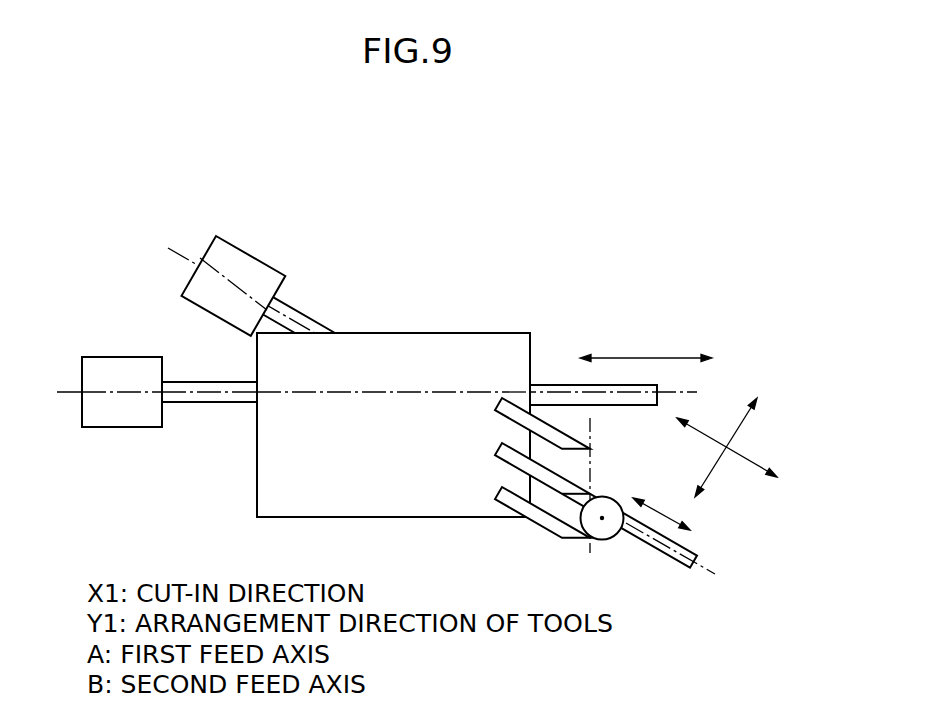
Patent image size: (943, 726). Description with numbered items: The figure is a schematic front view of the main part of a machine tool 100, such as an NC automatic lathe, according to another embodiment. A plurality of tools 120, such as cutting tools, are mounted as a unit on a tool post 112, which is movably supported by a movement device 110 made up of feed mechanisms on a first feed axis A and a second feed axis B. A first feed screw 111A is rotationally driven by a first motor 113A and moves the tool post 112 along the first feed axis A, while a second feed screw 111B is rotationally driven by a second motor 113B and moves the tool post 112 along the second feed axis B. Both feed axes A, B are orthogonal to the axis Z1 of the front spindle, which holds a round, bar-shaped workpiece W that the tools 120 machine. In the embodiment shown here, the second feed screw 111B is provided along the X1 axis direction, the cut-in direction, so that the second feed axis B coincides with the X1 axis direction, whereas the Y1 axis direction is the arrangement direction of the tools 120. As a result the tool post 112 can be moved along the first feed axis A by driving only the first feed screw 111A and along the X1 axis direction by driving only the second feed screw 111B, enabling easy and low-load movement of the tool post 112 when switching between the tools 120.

The machine tool 100 is at (605, 250).
The movement device 110 is at (345, 220).
The first feed screw 111A is at (202, 398).
The second feed screw 111B is at (293, 313).
The tool post 112 is at (397, 333).
The first motor 113A is at (117, 367).
The second motor 113B is at (228, 250).
The tools 120 is at (497, 408).
The workpiece W is at (597, 541).
The axis of the front spindle Z1 is at (604, 520).
The first feed axis A is at (646, 349).
The second feed axis B is at (661, 511).
The X1 axis direction X1 is at (741, 454).
The Y1 axis direction Y1 is at (732, 436).